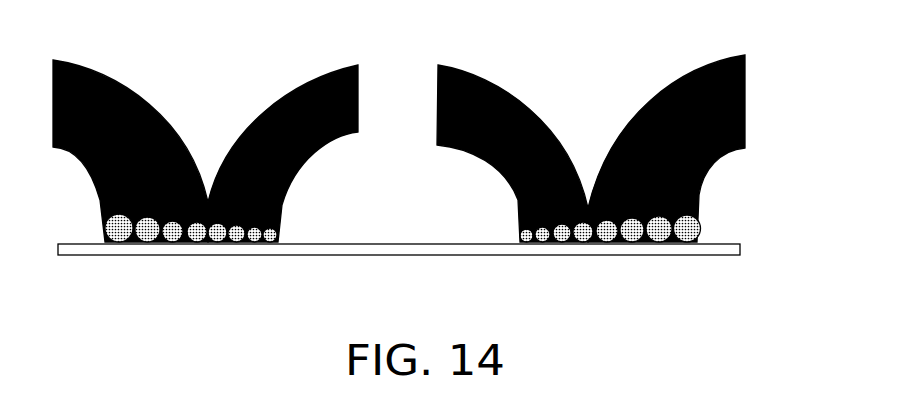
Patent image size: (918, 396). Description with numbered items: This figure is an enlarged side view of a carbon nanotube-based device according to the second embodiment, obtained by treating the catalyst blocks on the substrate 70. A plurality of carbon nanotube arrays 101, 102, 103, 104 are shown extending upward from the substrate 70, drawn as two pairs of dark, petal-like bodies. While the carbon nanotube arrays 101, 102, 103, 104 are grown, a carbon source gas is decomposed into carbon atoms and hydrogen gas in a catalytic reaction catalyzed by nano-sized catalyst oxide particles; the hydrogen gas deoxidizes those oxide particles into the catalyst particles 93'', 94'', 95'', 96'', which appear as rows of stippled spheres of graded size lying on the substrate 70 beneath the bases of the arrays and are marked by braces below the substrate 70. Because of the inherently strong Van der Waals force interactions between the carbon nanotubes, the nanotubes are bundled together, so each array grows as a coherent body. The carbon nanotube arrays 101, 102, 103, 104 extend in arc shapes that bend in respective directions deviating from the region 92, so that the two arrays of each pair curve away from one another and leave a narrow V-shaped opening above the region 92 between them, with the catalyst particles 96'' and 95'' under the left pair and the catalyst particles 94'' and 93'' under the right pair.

The carbon nanotube array 101 is at (708, 63).
The carbon nanotube array 102 is at (480, 72).
The carbon nanotube array 103 is at (327, 70).
The carbon nanotube array 104 is at (118, 77).
The region 92 is at (208, 200).
The substrate 70 is at (737, 251).
The catalyst particles 93'' is at (645, 256).
The catalyst particles 94'' is at (555, 259).
The catalyst particles 95'' is at (242, 260).
The catalyst particles 96'' is at (156, 255).